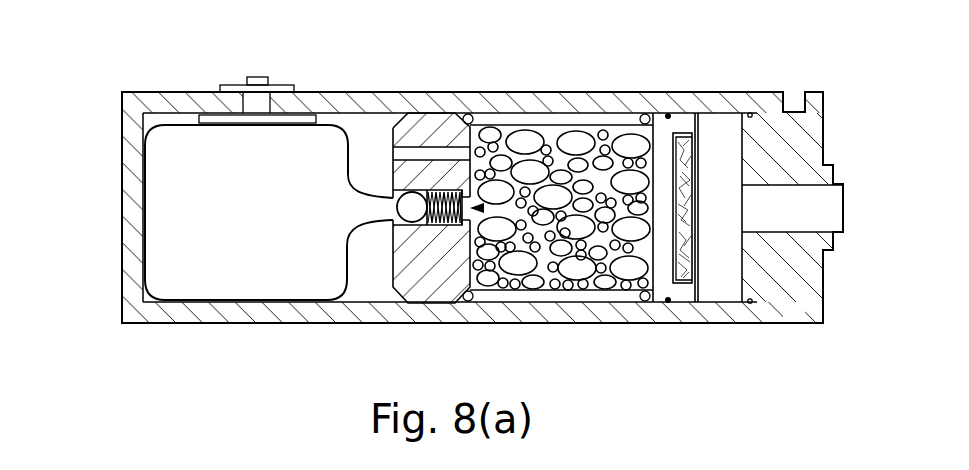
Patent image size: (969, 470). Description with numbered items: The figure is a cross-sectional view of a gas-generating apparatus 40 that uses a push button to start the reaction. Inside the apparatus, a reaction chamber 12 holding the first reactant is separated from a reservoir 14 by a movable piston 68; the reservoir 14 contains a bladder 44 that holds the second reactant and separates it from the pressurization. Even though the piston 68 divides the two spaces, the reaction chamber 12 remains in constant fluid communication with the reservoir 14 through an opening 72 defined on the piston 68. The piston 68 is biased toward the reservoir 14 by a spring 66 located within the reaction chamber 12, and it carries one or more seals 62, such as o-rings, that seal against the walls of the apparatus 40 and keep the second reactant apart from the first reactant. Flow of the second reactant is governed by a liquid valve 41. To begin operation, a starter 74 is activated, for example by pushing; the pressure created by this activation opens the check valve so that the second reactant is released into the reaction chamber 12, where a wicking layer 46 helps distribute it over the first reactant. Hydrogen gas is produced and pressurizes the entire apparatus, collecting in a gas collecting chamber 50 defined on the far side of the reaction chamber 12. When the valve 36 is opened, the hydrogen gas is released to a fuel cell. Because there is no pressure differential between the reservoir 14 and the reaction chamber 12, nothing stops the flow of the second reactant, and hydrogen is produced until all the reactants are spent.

The gas-generating apparatus 40 is at (90, 55).
The starter 74 is at (258, 77).
The reservoir 14 is at (383, 130).
The movable piston 68 is at (446, 127).
The opening 72 is at (437, 160).
The reaction chamber 12 is at (557, 160).
The spring 66 is at (607, 120).
The gas collecting chamber 50 is at (722, 128).
The valve 36 is at (827, 197).
The bladder 44 is at (172, 207).
The seal 62 is at (466, 302).
The liquid valve 41 is at (482, 208).
The wicking layer 46 is at (692, 268).